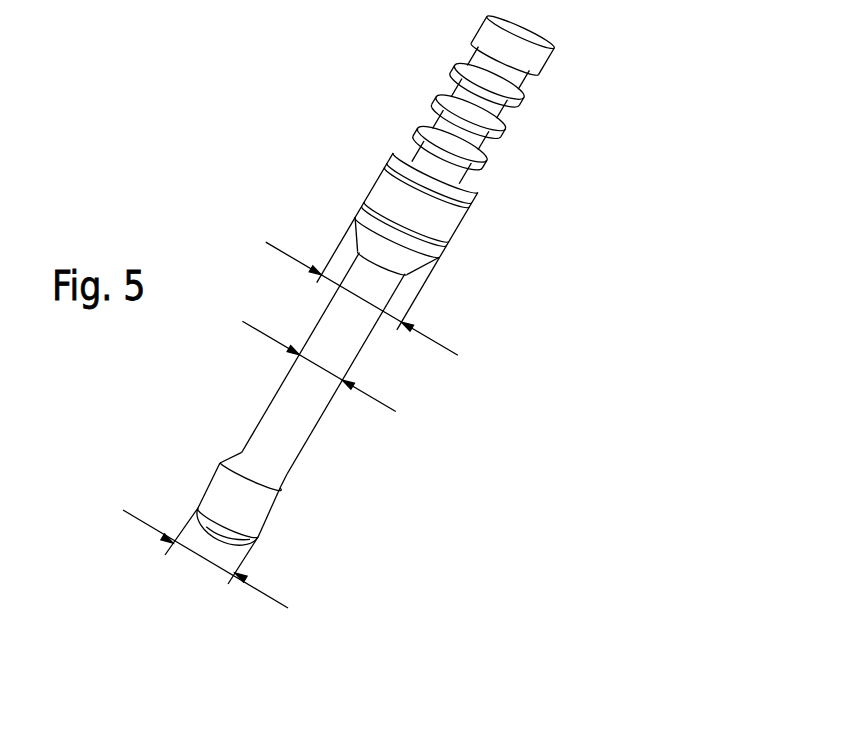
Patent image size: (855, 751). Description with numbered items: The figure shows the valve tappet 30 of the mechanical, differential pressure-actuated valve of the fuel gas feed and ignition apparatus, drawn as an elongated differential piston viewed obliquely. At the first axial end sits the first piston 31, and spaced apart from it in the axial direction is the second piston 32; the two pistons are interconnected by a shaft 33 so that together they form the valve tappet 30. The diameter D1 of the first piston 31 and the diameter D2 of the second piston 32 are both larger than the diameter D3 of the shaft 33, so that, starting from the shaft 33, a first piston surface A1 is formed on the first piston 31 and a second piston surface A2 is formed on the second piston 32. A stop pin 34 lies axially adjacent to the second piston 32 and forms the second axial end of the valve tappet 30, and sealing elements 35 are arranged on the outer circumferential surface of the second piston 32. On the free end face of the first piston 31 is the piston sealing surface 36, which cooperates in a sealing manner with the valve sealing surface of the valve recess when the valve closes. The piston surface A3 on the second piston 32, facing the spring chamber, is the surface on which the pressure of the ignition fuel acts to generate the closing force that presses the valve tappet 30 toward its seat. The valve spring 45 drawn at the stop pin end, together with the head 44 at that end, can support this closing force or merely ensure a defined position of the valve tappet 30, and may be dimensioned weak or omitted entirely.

The valve tappet 30 is at (583, 222).
The first piston 31 is at (230, 498).
The second piston 32 is at (421, 199).
The shaft 33 is at (280, 423).
The stop pin 34 is at (480, 90).
The sealing elements 35 is at (470, 196).
The piston sealing surface 36 is at (238, 533).
The head 44 is at (528, 43).
The valve spring 45 is at (506, 122).
The first piston surface A1 is at (250, 458).
The second piston surface A2 is at (378, 232).
The piston surface A3 is at (403, 147).
The diameter of the first piston D1 is at (205, 558).
The diameter of the second piston D2 is at (378, 271).
The diameter of the shaft D3 is at (319, 366).